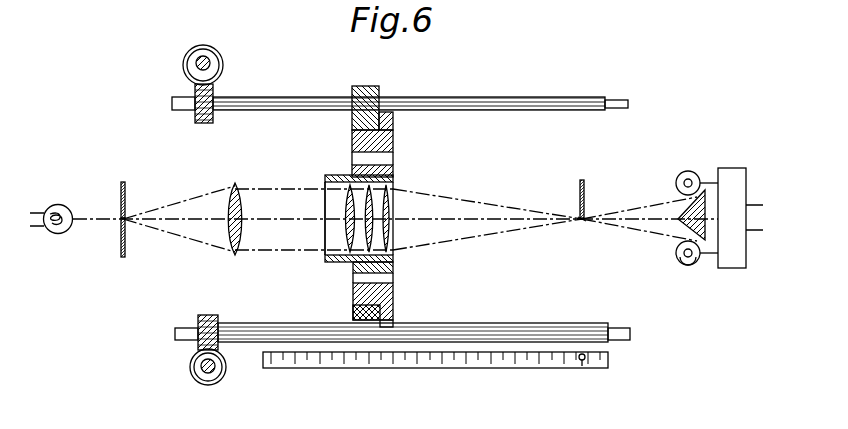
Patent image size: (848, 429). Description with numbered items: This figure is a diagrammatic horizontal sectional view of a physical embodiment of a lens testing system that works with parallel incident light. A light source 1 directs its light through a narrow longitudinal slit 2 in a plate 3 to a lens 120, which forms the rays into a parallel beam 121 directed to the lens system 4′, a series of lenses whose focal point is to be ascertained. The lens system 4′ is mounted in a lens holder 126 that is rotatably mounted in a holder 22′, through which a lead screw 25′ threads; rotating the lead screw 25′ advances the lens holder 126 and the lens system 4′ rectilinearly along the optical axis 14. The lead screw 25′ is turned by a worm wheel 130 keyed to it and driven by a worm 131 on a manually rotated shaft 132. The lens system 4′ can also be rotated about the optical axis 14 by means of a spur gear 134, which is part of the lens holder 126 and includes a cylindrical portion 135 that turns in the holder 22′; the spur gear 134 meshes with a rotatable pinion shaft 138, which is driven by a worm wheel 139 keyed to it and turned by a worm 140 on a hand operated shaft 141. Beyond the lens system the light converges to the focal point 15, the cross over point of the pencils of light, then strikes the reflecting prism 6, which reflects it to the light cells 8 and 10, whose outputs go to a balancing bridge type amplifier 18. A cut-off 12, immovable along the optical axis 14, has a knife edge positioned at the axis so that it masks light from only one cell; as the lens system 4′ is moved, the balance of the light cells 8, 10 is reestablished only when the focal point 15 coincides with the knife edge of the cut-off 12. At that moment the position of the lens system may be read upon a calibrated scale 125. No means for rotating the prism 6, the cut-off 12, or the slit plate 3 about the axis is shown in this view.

The light source 1 is at (57, 205).
The slit 2 is at (118, 226).
The plate 3 is at (120, 200).
The optical axis 14 is at (280, 222).
The lens 120 is at (239, 196).
The parallel beam 121 is at (303, 256).
The lens system 4′ is at (338, 190).
The lens holder 126 is at (395, 172).
The cylindrical portion 135 is at (352, 137).
The holder 22′ is at (352, 122).
The lead screw 25′ is at (446, 97).
The worm wheel 130 is at (199, 117).
The worm 131 is at (222, 72).
The shaft 132 is at (214, 62).
The spur gear 134 is at (393, 297).
The pinion shaft 138 is at (450, 324).
The worm wheel 139 is at (218, 318).
The worm 140 is at (200, 384).
The hand operated shaft 141 is at (213, 378).
The calibrated scale 125 is at (473, 369).
The cut-off 12 is at (584, 186).
The focal point 15 is at (582, 222).
The reflecting prism 6 is at (690, 222).
The light cell 8 is at (694, 172).
The light cell 10 is at (684, 266).
The balancing bridge type amplifier 18 is at (728, 265).